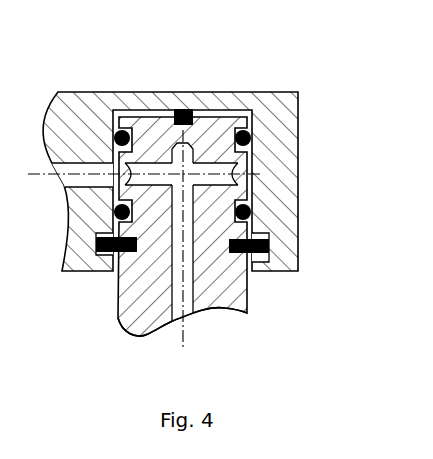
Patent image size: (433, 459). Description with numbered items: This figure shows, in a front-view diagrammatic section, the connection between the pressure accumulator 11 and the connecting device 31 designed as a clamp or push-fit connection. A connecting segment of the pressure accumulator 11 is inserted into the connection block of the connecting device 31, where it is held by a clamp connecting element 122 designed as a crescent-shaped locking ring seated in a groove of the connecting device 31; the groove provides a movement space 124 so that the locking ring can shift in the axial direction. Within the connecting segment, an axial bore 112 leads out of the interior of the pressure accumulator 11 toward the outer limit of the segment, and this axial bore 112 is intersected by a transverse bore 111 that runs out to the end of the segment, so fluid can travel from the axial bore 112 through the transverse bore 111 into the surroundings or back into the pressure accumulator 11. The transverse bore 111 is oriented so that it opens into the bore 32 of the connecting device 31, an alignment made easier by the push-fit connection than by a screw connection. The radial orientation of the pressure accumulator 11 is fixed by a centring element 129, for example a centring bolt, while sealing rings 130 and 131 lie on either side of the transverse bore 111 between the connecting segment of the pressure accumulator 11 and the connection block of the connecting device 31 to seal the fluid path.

The pressure accumulator 11 is at (164, 130).
The connecting device 31 is at (79, 119).
The bore 32 is at (77, 181).
The transverse bore 111 is at (226, 182).
The axial bore 112 is at (187, 298).
The clamp connecting element 122 is at (85, 268).
The movement space 124 is at (261, 258).
The centring element 129 is at (195, 108).
The sealing ring 130 is at (252, 137).
The sealing ring 131 is at (253, 207).